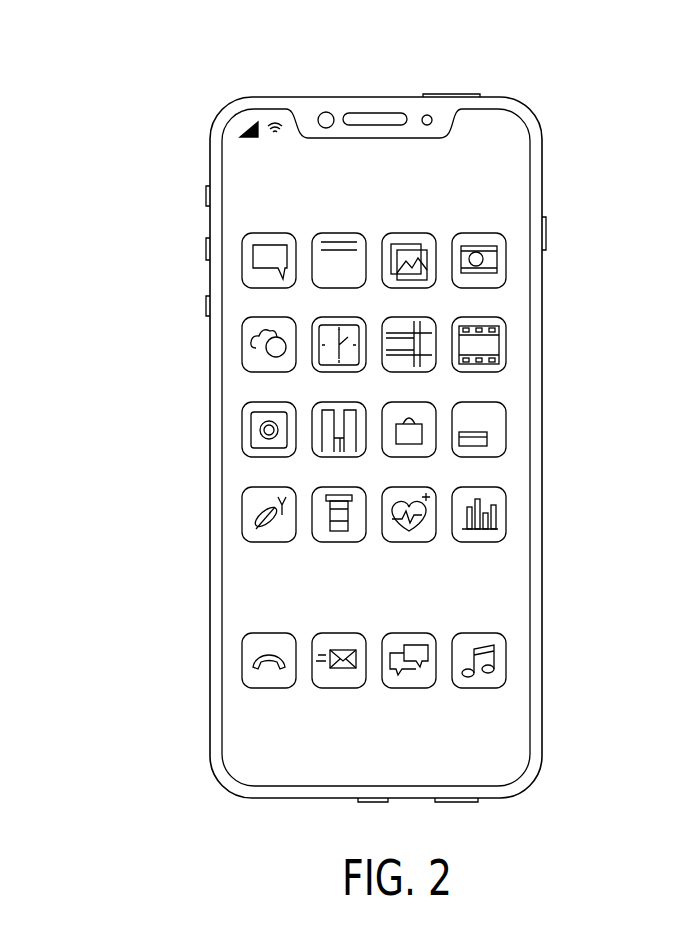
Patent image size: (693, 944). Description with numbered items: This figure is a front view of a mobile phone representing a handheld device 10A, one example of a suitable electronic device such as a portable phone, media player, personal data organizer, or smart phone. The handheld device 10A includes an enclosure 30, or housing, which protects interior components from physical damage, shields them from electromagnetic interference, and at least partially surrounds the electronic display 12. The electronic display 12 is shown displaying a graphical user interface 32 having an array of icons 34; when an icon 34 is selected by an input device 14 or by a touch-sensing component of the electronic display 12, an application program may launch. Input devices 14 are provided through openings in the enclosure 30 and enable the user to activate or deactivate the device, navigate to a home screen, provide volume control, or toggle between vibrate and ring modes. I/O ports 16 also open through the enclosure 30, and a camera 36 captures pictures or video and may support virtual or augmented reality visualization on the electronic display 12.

The handheld device 10A is at (200, 86).
The electronic display 12 is at (532, 575).
The input devices 14 is at (455, 94).
The I/O ports 16 is at (262, 800).
The enclosure 30 is at (543, 178).
The graphical user interface 32 is at (505, 390).
The icon 34 is at (396, 534).
The camera 36 is at (320, 112).